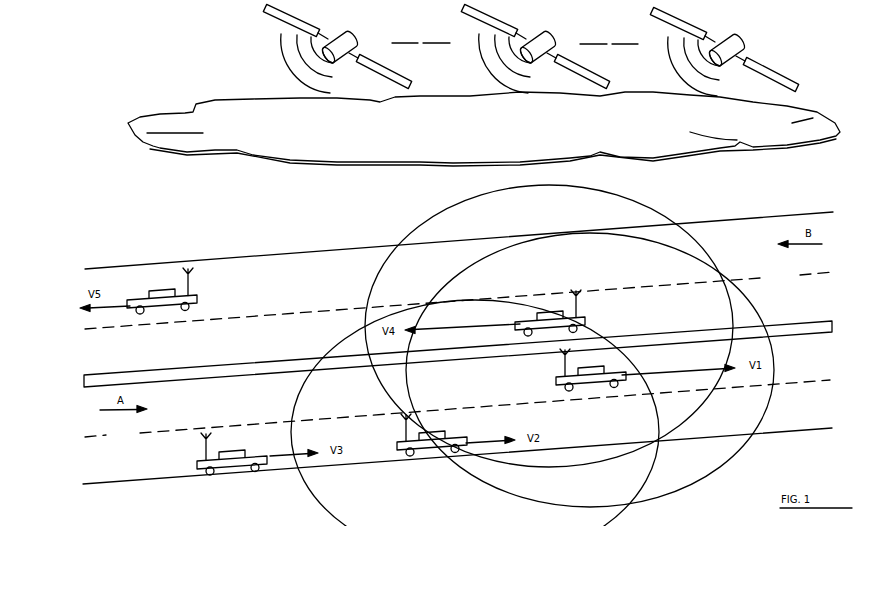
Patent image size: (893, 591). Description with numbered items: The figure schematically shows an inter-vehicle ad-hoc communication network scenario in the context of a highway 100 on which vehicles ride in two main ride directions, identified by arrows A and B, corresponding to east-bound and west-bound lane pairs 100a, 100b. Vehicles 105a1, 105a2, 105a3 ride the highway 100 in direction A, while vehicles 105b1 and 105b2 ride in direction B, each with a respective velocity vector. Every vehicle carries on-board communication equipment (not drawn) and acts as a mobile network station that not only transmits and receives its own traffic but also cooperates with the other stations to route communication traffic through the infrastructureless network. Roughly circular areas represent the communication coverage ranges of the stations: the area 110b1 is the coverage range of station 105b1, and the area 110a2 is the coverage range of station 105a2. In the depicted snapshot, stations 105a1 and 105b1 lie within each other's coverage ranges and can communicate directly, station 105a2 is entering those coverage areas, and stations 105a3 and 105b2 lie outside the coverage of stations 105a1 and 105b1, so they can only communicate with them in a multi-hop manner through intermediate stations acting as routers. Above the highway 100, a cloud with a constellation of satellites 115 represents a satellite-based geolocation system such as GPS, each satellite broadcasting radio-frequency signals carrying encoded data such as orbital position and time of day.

The highway 100 is at (157, 200).
The east-bound lane pair 100a is at (457, 409).
The west-bound lane pair 100b is at (459, 299).
The vehicle 105a1 is at (555, 379).
The vehicle 105a2 is at (396, 445).
The vehicle 105a3 is at (197, 463).
The vehicle 105b1 is at (588, 314).
The vehicle 105b2 is at (200, 300).
The communication coverage area 110b1 is at (410, 233).
The communication coverage area 110a2 is at (309, 508).
The satellites 115 is at (282, 31).